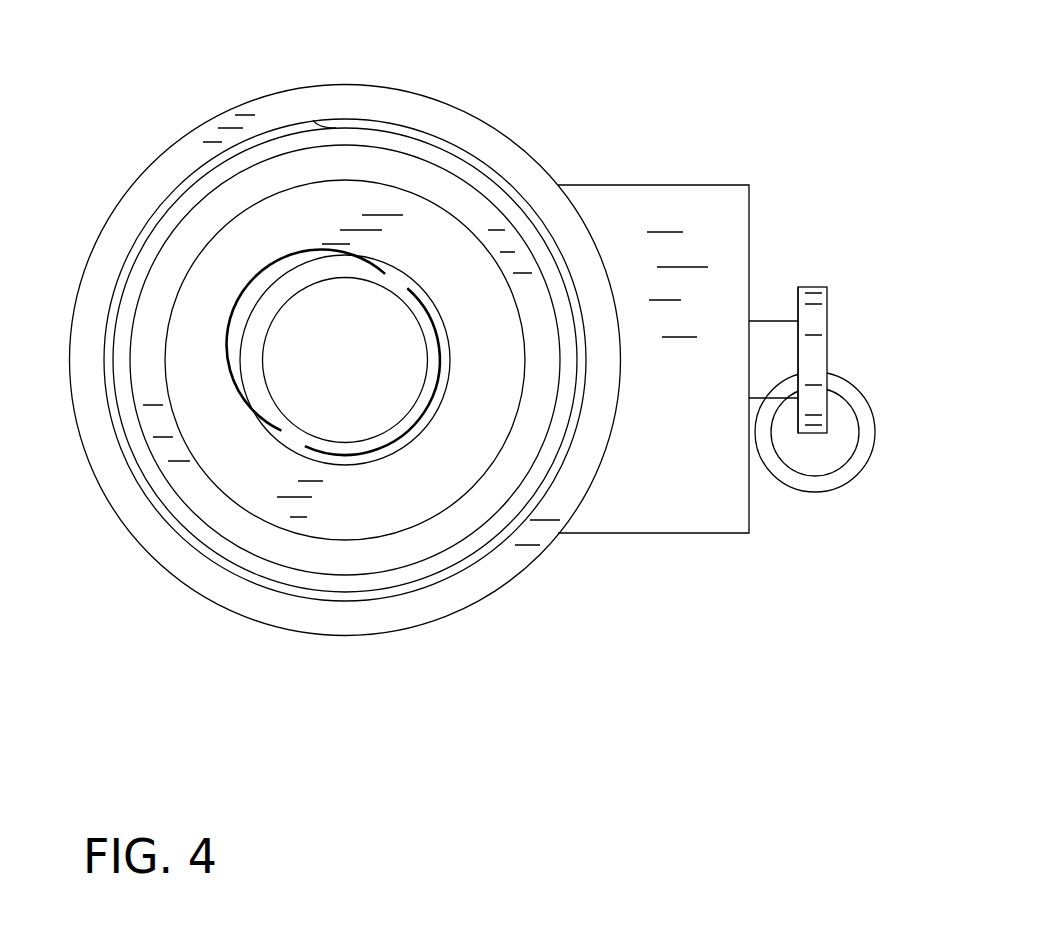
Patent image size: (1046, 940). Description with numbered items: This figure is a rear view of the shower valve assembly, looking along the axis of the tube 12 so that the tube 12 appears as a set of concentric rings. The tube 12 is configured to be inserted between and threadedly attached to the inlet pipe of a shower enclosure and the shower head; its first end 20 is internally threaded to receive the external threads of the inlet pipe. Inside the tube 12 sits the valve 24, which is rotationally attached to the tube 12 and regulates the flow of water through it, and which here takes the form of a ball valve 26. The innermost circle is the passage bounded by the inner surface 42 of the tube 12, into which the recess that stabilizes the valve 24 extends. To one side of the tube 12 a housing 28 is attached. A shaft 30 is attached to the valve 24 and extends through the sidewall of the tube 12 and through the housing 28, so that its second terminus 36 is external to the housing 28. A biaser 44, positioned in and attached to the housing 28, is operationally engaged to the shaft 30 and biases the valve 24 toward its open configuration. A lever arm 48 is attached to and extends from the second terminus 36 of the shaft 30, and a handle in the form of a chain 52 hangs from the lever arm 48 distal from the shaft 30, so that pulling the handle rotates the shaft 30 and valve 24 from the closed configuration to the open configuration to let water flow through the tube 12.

The tube 12 is at (138, 550).
The first end 20 is at (341, 98).
The valve 24 is at (425, 233).
The ball valve 26 is at (465, 268).
The housing 28 is at (616, 176).
The shaft 30 is at (776, 313).
The second terminus 36 is at (793, 347).
The inner surface 42 is at (100, 373).
The biaser 44 is at (695, 247).
The lever arm 48 is at (826, 352).
The chain 52 is at (843, 479).